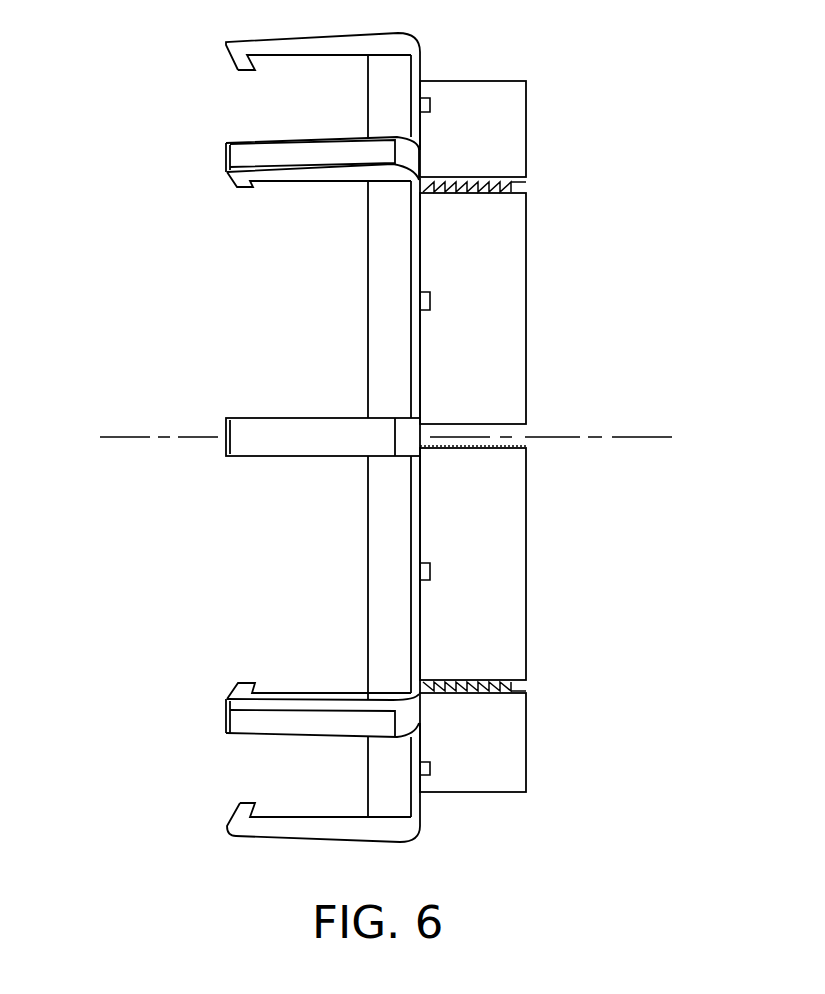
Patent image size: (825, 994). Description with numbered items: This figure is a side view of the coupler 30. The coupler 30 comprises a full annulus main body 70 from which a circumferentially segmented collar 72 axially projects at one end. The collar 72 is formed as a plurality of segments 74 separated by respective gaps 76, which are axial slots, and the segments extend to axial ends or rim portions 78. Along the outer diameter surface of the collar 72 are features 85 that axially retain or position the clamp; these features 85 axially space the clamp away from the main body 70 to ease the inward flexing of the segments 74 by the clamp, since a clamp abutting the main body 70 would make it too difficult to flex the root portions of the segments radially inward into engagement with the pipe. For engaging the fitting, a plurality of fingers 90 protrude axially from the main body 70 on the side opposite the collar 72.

The coupler 30 is at (653, 328).
The main body portion 70 is at (385, 627).
The circumferentially segmented collar 72 is at (468, 803).
The segments 74 is at (503, 296).
The gaps 76 is at (523, 432).
The rim portions 78 is at (526, 609).
The features 85 is at (443, 568).
The fingers 90 is at (275, 847).